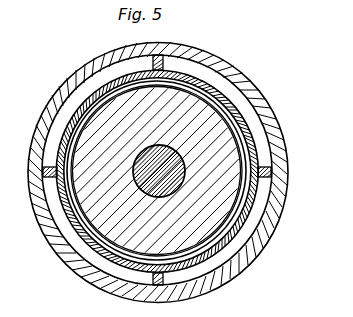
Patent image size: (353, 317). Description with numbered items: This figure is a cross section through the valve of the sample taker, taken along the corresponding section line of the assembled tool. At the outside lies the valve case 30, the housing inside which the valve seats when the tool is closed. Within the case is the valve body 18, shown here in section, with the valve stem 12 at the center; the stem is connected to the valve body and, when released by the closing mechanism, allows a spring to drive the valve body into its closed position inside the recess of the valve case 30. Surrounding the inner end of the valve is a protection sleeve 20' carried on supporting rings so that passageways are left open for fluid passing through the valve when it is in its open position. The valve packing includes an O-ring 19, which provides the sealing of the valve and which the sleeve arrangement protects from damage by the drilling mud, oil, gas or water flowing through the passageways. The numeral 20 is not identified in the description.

The valve case 30 is at (268, 220).
The spacer 20 is at (180, 170).
The protection sleeve 20' is at (188, 171).
The valve body 18 is at (247, 112).
The O-ring 19 is at (229, 218).
The valve stem 12 is at (165, 178).